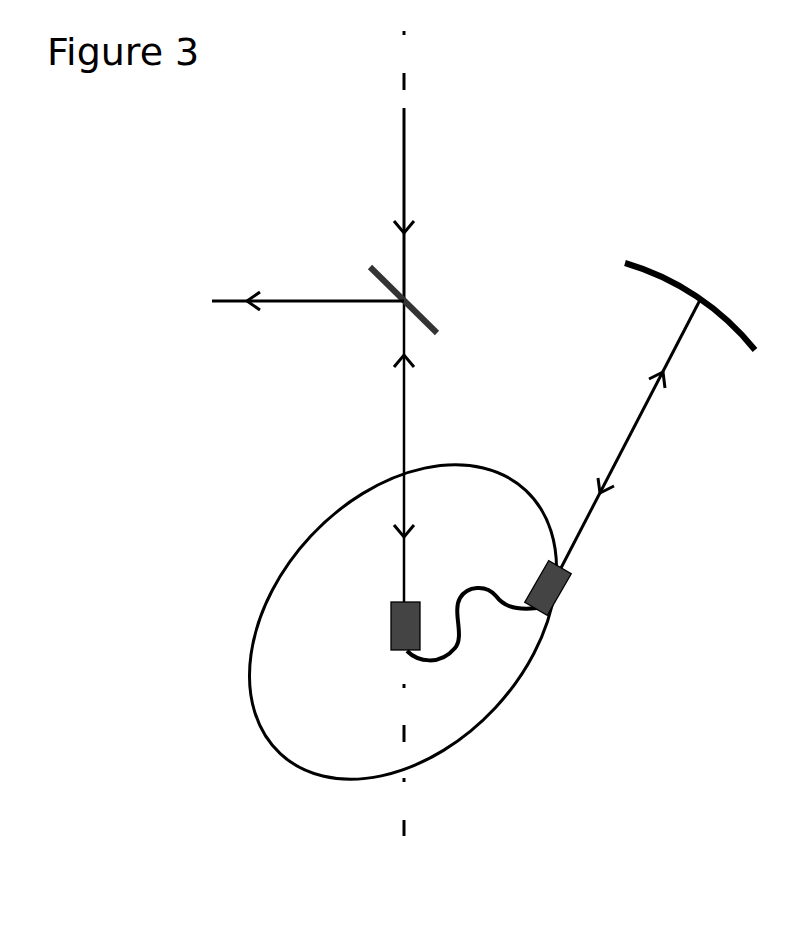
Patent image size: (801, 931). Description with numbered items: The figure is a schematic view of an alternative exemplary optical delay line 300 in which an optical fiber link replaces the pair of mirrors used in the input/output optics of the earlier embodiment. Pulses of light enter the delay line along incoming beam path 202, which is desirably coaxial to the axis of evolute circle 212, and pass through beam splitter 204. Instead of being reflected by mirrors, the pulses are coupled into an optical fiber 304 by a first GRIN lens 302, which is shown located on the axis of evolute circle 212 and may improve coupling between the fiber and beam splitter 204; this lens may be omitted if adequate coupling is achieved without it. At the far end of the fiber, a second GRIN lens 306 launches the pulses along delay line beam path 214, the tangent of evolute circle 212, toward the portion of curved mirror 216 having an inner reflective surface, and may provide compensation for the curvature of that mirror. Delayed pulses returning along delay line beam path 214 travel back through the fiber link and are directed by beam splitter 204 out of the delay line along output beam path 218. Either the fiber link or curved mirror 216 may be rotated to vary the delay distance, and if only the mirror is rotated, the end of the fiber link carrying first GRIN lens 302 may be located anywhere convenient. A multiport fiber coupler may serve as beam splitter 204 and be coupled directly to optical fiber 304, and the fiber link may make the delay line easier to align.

The optical delay line 300 is at (590, 28).
The incoming beam path 202 is at (405, 211).
The beam splitter 204 is at (413, 308).
The output beam path 218 is at (282, 298).
The curved mirror 216 is at (683, 283).
The delay line beam path 214 is at (625, 442).
The evolute circle 212 is at (258, 723).
The first GRIN lens 302 is at (390, 623).
The optical fiber 304 is at (460, 638).
The second GRIN lens 306 is at (567, 590).